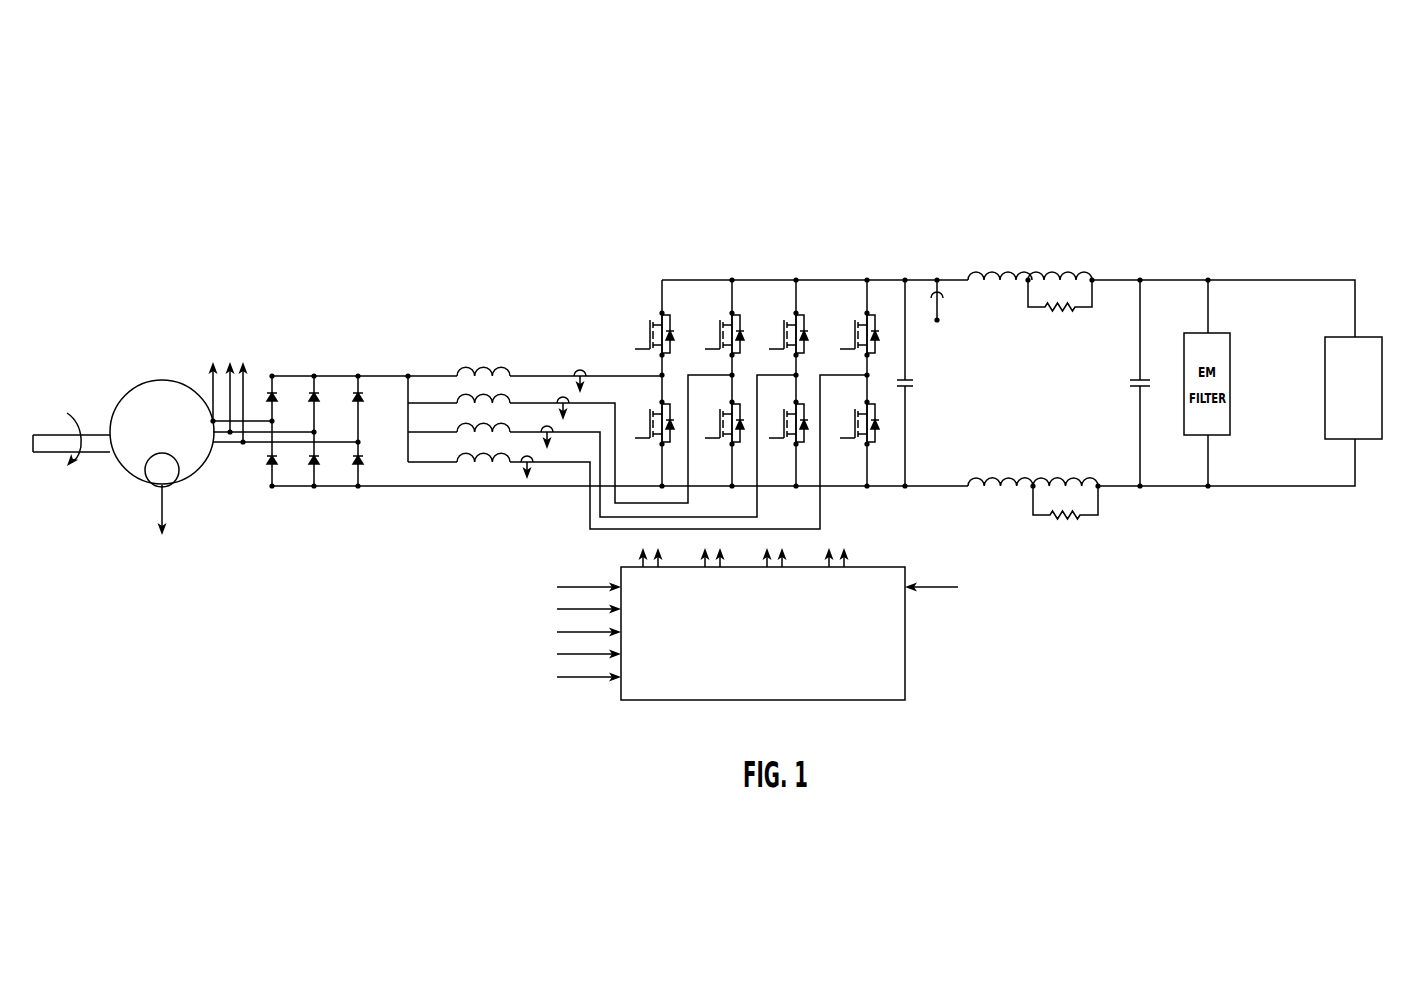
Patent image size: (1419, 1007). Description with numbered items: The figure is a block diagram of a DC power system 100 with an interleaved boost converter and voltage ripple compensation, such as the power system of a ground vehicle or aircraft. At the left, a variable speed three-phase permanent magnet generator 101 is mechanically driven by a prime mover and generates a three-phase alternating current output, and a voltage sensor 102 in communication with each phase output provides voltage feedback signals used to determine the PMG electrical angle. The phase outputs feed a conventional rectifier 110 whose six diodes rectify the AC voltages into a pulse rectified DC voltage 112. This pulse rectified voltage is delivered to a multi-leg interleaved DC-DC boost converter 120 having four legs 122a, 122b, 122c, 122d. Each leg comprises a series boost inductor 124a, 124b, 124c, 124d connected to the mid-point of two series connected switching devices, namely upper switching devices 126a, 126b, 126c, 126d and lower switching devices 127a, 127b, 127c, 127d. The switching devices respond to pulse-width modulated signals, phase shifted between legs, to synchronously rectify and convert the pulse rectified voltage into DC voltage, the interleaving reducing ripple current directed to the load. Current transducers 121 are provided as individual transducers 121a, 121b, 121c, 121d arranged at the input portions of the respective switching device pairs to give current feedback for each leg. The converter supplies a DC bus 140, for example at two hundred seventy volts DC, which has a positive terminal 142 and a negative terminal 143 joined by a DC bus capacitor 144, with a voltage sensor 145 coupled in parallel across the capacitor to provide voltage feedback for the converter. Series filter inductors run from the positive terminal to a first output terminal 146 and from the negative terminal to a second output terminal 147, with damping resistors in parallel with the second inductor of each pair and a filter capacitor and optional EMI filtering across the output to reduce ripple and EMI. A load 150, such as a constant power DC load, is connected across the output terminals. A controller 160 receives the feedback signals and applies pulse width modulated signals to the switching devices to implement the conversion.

The DC power system 100 is at (420, 122).
The three-phase permanent magnet generator 101 is at (133, 390).
The voltage sensor 102 is at (278, 385).
The rectifier 110 is at (355, 340).
The pulse rectified DC voltage 112 is at (388, 376).
The multi-leg interleaved DC-DC boost converter 120 is at (883, 242).
The current transducers 121 is at (446, 582).
The current transducer 121a is at (580, 368).
The current transducer 121b is at (560, 410).
The current transducer 121c is at (545, 440).
The current transducer 121d is at (535, 460).
The series boost inductor 124a is at (460, 363).
The series boost inductor 124b is at (477, 393).
The series boost inductor 124c is at (490, 423).
The series boost inductor 124d is at (508, 453).
The leg 122a is at (662, 313).
The leg 122b is at (732, 313).
The leg 122c is at (796, 313).
The leg 122d is at (870, 279).
The switching device 126a is at (660, 313).
The switching device 126b is at (750, 330).
The switching device 126c is at (822, 322).
The switching device 126d is at (883, 323).
The switching device 127a is at (668, 403).
The switching device 127b is at (714, 445).
The switching device 127c is at (784, 441).
The switching device 127d is at (883, 433).
The DC bus 140 is at (914, 264).
The positive terminal 142 is at (905, 281).
The negative terminal 143 is at (907, 488).
The DC bus capacitor 144 is at (912, 389).
The voltage sensor 145 is at (943, 306).
The first output terminal 146 is at (1140, 279).
The second output terminal 147 is at (1140, 489).
The load 150 is at (1365, 335).
The controller 160 is at (870, 681).